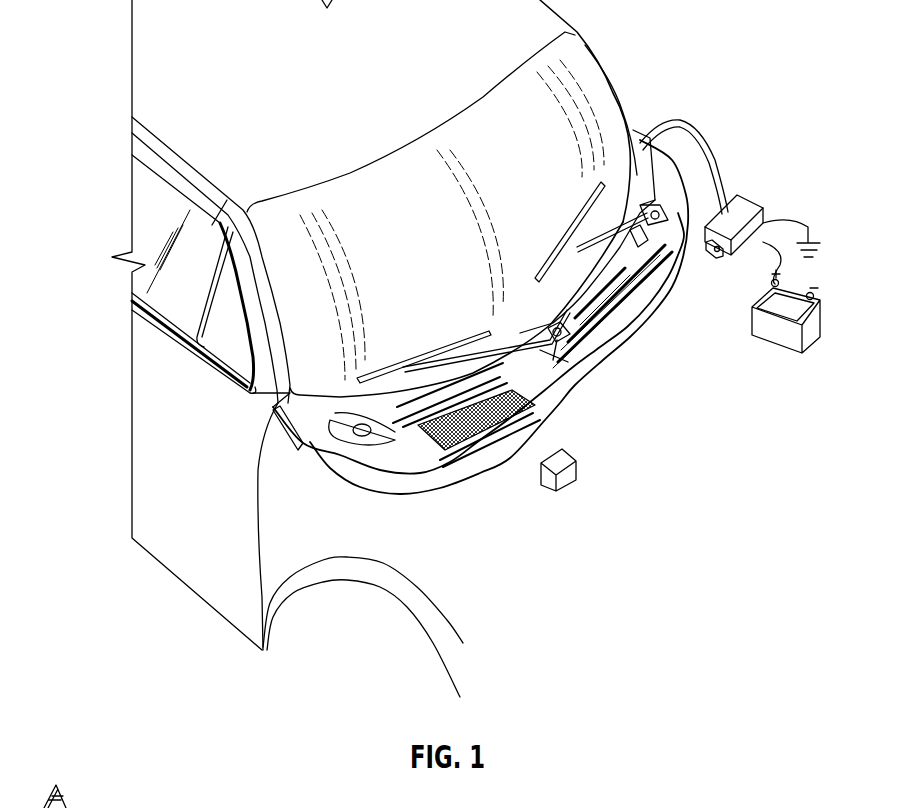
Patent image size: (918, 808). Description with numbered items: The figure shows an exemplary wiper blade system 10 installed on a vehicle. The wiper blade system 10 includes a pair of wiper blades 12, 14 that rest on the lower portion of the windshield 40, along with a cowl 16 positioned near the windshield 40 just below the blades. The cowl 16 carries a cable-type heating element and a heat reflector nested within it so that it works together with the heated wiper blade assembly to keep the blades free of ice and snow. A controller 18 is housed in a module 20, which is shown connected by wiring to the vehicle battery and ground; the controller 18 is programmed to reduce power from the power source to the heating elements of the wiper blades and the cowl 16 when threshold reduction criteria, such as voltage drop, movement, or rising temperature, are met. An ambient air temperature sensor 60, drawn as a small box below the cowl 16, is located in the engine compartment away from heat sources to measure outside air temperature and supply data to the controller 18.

The wiper blade system 10 is at (724, 115).
The wiper blade 12 is at (447, 352).
The wiper blade 14 is at (578, 223).
The cowl 16 is at (390, 433).
The controller 18 is at (745, 208).
The module 20 is at (767, 217).
The windshield 40 is at (562, 50).
The ambient air temperature sensor 60 is at (540, 470).